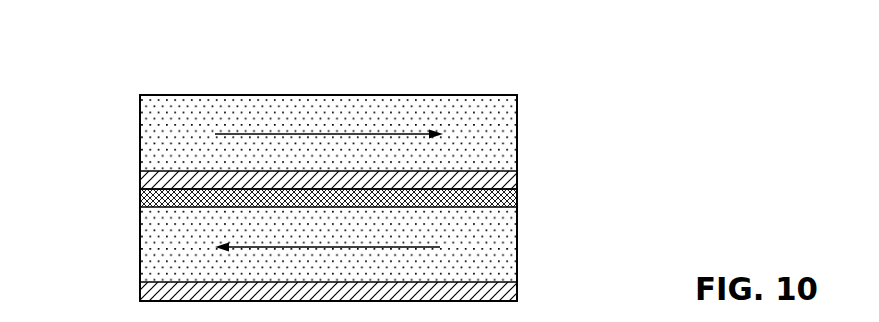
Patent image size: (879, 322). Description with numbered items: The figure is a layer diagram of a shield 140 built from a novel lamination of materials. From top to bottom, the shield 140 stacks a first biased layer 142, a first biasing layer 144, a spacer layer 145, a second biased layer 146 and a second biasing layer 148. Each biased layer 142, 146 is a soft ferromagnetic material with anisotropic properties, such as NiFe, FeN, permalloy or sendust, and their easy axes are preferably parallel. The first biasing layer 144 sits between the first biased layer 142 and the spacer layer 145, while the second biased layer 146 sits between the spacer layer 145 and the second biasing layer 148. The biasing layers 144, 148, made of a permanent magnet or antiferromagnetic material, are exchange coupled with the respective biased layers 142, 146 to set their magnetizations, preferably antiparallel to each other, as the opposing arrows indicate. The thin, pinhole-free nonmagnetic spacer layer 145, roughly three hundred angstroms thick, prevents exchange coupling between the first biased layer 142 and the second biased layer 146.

The shield 140 is at (86, 81).
The first biased layer 142 is at (498, 134).
The first biasing layer 144 is at (500, 183).
The spacer layer 145 is at (500, 201).
The second biased layer 146 is at (497, 247).
The second biasing layer 148 is at (500, 294).